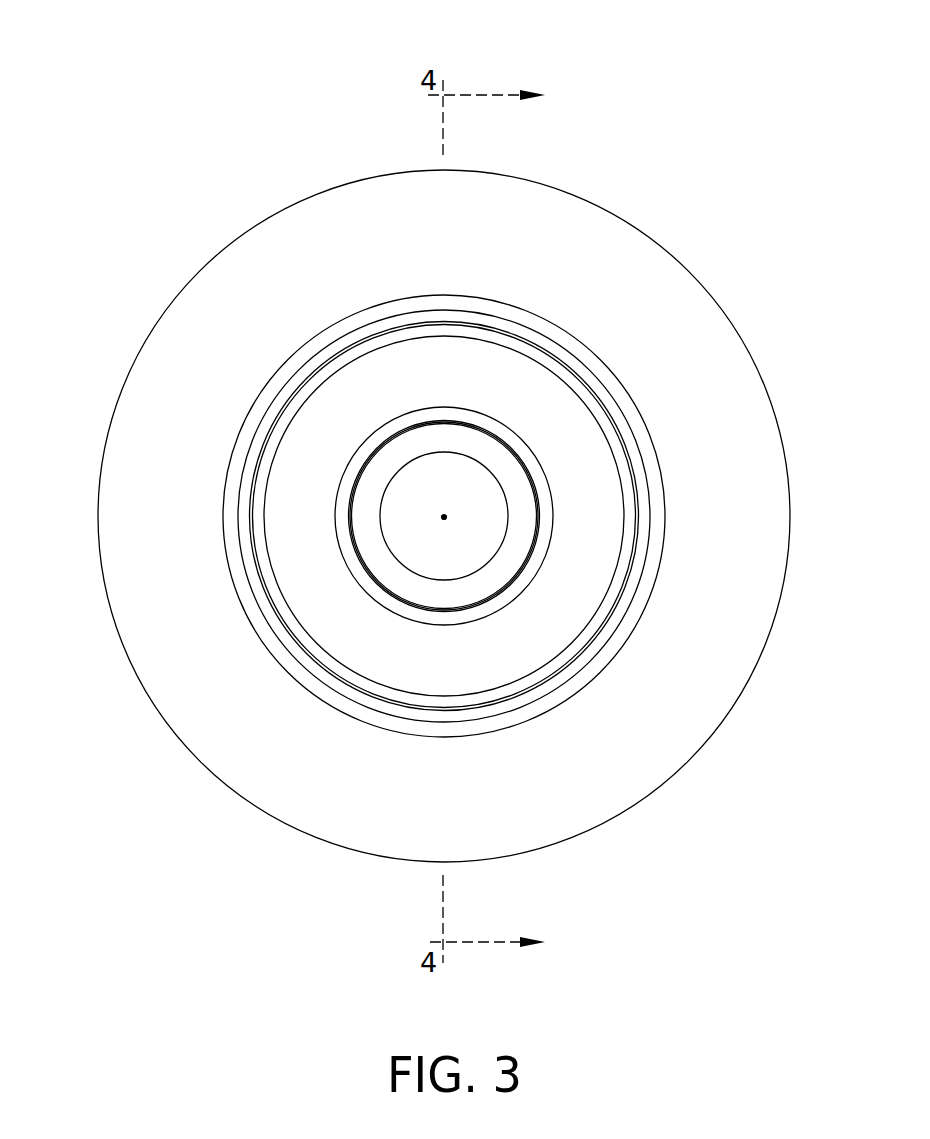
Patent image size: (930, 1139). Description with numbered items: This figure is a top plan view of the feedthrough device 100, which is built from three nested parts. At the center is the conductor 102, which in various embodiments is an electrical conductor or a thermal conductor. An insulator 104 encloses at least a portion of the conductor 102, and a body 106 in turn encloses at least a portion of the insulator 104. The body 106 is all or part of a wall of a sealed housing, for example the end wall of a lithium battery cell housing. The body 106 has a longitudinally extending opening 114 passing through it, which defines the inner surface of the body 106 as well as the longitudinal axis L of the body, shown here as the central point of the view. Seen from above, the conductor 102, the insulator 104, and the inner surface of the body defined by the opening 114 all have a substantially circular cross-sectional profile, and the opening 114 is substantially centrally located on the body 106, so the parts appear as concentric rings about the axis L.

The feedthrough device 100 is at (200, 80).
The conductor 102 is at (408, 525).
The insulator 104 is at (380, 470).
The body 106 is at (242, 300).
The opening 114 is at (391, 599).
The longitudinal axis L is at (447, 517).